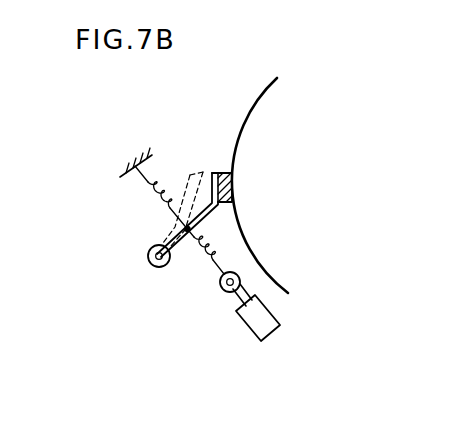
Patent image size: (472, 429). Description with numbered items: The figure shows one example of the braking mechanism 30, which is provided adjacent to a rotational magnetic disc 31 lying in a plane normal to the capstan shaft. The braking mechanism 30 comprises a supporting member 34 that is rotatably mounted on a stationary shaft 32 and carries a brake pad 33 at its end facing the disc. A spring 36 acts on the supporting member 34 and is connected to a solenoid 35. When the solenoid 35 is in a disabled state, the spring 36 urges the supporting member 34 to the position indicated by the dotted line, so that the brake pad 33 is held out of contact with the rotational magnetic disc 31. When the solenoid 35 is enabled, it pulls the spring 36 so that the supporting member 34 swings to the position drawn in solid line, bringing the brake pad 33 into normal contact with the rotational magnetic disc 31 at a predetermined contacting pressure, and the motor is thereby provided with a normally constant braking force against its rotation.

The braking mechanism 30 is at (126, 236).
The rotational magnetic disc 31 is at (263, 120).
The stationary shaft 32 is at (152, 265).
The brake pad 33 is at (225, 172).
The supporting member 34 is at (181, 248).
The solenoid 35 is at (255, 327).
The spring 36 is at (215, 257).